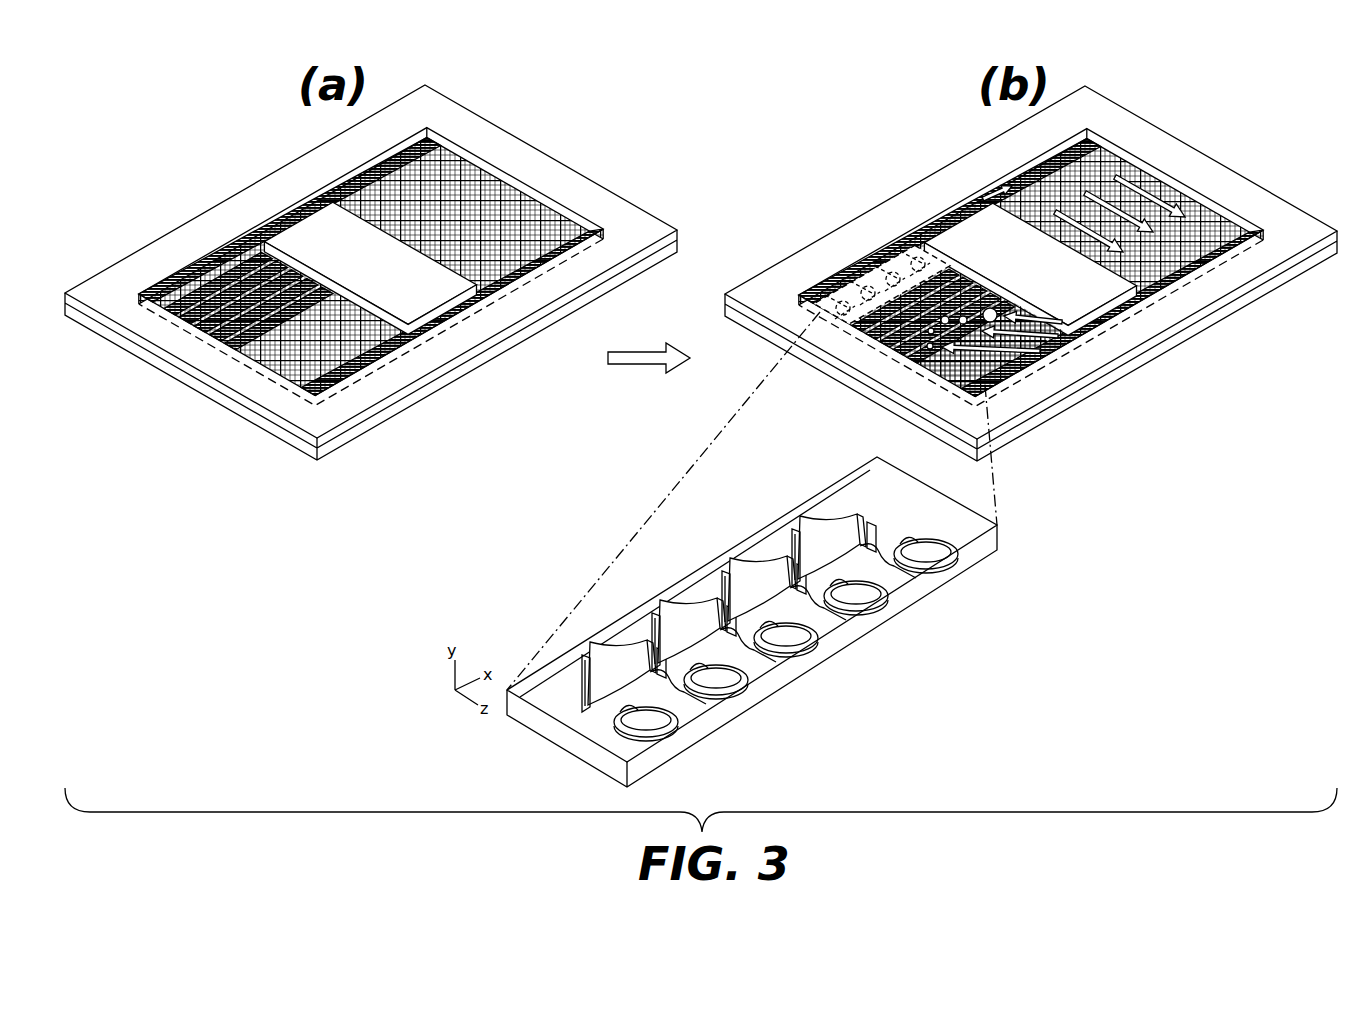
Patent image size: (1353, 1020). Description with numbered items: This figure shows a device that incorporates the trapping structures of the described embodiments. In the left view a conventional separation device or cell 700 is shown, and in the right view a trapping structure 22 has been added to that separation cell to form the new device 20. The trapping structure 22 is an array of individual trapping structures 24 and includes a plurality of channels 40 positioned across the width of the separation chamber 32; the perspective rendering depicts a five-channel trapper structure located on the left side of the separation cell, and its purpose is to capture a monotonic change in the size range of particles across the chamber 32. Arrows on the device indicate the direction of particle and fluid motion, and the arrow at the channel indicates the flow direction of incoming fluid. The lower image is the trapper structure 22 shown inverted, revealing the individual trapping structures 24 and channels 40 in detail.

The cell 700 is at (581, 146).
The microfluidic device 20 is at (934, 150).
The trapping structure 22 is at (553, 752).
The trapping structures 24 is at (674, 746).
The separation chamber 32 is at (1016, 372).
The channels 40 is at (558, 660).